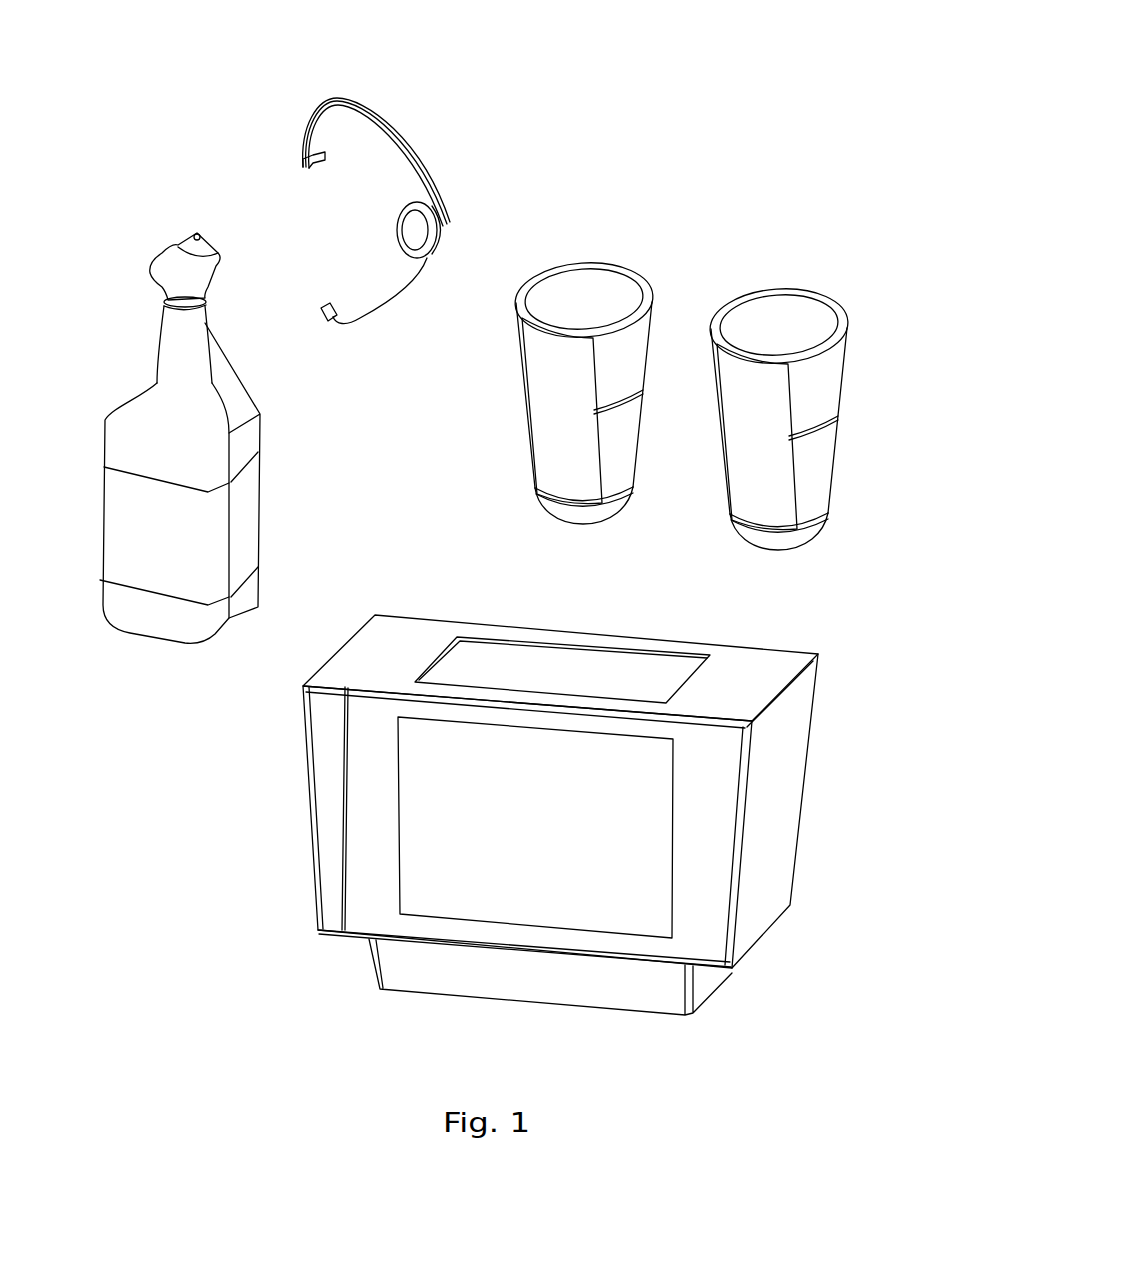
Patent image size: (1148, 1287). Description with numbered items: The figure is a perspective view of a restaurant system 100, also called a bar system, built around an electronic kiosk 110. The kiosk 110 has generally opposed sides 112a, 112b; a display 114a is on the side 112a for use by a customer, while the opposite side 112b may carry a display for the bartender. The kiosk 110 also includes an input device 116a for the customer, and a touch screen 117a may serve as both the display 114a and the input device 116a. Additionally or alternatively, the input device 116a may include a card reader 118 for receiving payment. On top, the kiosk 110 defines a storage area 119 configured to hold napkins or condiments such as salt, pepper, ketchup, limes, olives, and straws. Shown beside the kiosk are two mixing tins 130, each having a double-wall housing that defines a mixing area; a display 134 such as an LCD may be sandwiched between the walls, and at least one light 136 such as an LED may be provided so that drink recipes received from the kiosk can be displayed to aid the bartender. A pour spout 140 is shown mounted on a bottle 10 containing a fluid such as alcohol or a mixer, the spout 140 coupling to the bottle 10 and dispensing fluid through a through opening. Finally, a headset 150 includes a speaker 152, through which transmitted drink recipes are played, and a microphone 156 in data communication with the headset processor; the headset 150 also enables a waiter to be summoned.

The restaurant system 100 is at (747, 90).
The bottle 10 is at (133, 380).
The pour spout 140 is at (177, 228).
The headset 150 is at (365, 177).
The speaker 152 is at (403, 220).
The microphone 156 is at (320, 303).
The mixing tin 130 is at (560, 227).
The display 134 is at (537, 374).
The light 136 is at (812, 437).
The electronic kiosk 110 is at (537, 806).
The side 112a is at (710, 902).
The side 112b is at (812, 735).
The display 114a is at (568, 910).
The input device 116a is at (340, 853).
The touch screen 117a is at (555, 836).
The card reader 118 is at (340, 910).
The storage area 119 is at (482, 657).